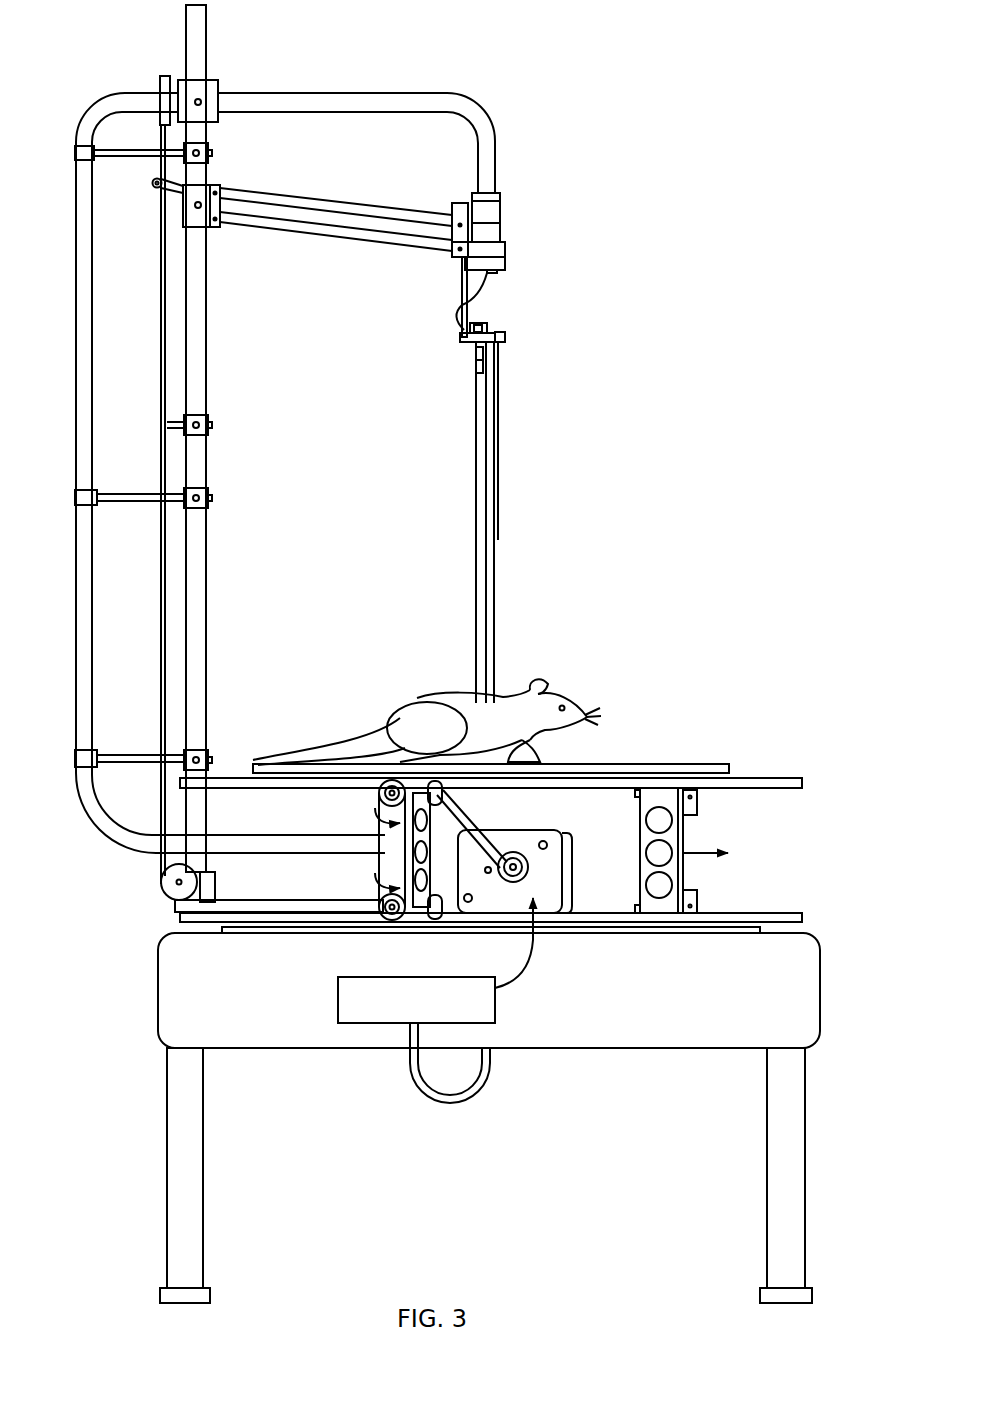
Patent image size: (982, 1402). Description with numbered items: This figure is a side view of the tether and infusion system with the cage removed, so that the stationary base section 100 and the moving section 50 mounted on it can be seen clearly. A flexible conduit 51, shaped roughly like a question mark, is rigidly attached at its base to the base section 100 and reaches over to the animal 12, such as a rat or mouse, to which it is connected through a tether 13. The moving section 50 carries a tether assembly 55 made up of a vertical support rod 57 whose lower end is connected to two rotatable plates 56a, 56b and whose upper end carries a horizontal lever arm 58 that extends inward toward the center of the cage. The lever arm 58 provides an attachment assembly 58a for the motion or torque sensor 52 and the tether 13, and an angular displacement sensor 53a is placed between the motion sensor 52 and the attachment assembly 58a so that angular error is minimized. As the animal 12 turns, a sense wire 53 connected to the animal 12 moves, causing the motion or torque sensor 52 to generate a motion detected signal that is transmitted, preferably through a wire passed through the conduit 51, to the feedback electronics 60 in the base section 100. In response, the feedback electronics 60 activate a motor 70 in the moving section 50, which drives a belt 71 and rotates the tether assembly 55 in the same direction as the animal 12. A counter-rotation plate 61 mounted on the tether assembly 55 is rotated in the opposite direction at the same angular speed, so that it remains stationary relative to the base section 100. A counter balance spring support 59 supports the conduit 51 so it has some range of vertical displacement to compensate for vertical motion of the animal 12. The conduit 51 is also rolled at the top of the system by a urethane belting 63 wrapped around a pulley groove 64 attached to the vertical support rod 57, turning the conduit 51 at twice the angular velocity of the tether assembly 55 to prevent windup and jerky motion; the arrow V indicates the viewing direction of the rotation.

The animal 12 is at (517, 702).
The tether 13 is at (496, 416).
The moving section 50 is at (816, 768).
The flexible conduit 51 is at (452, 93).
The motion or torque sensor 52 is at (485, 325).
The sense wire 53 is at (476, 423).
The angular displacement sensor 53a is at (460, 286).
The tether assembly 55 is at (214, 636).
The rotatable plate 56a is at (775, 790).
The rotatable plate 56b is at (778, 913).
The vertical support rod 57 is at (207, 687).
The horizontal lever arm 58 is at (309, 199).
The attachment assembly 58a is at (505, 250).
The counter balance spring support 59 is at (162, 275).
The feedback electronics 60 is at (497, 1010).
The counter-rotation plate 61 is at (725, 764).
The urethane belting 63 is at (162, 674).
The pulley groove 64 is at (160, 892).
The motor 70 is at (572, 876).
The belt 71 is at (470, 816).
The base section 100 is at (835, 960).
The direction V is at (203, 778).